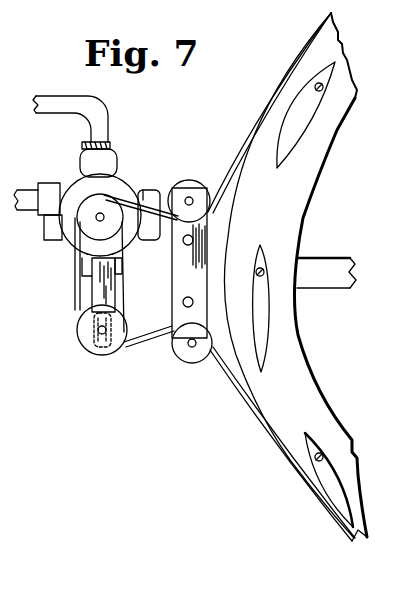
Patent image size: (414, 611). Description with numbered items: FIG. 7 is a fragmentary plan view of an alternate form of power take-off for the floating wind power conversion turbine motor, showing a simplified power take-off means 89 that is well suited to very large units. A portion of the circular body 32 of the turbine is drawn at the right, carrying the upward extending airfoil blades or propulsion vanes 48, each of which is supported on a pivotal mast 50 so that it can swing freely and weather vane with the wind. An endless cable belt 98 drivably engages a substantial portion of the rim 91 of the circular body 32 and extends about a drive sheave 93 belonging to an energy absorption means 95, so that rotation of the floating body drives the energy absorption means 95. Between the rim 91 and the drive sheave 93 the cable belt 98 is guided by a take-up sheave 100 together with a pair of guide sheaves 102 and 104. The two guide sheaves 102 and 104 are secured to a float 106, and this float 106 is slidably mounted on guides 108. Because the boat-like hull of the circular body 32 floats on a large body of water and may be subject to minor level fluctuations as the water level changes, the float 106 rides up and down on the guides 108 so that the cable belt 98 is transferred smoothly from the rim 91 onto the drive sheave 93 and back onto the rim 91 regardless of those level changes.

The circular body 32 is at (298, 236).
The propulsion vanes 48 is at (304, 119).
The pivotal mast 50 is at (263, 276).
The power take-off means 89 is at (186, 386).
The rim 91 is at (236, 186).
The drive sheave 93 is at (105, 197).
The energy absorption means 95 is at (70, 181).
The endless cable belt 98 is at (233, 157).
The take-up sheave 100 is at (88, 352).
The guide sheave 102 is at (186, 188).
The guide sheave 104 is at (185, 355).
The float 106 is at (182, 270).
The guides 108 is at (194, 242).